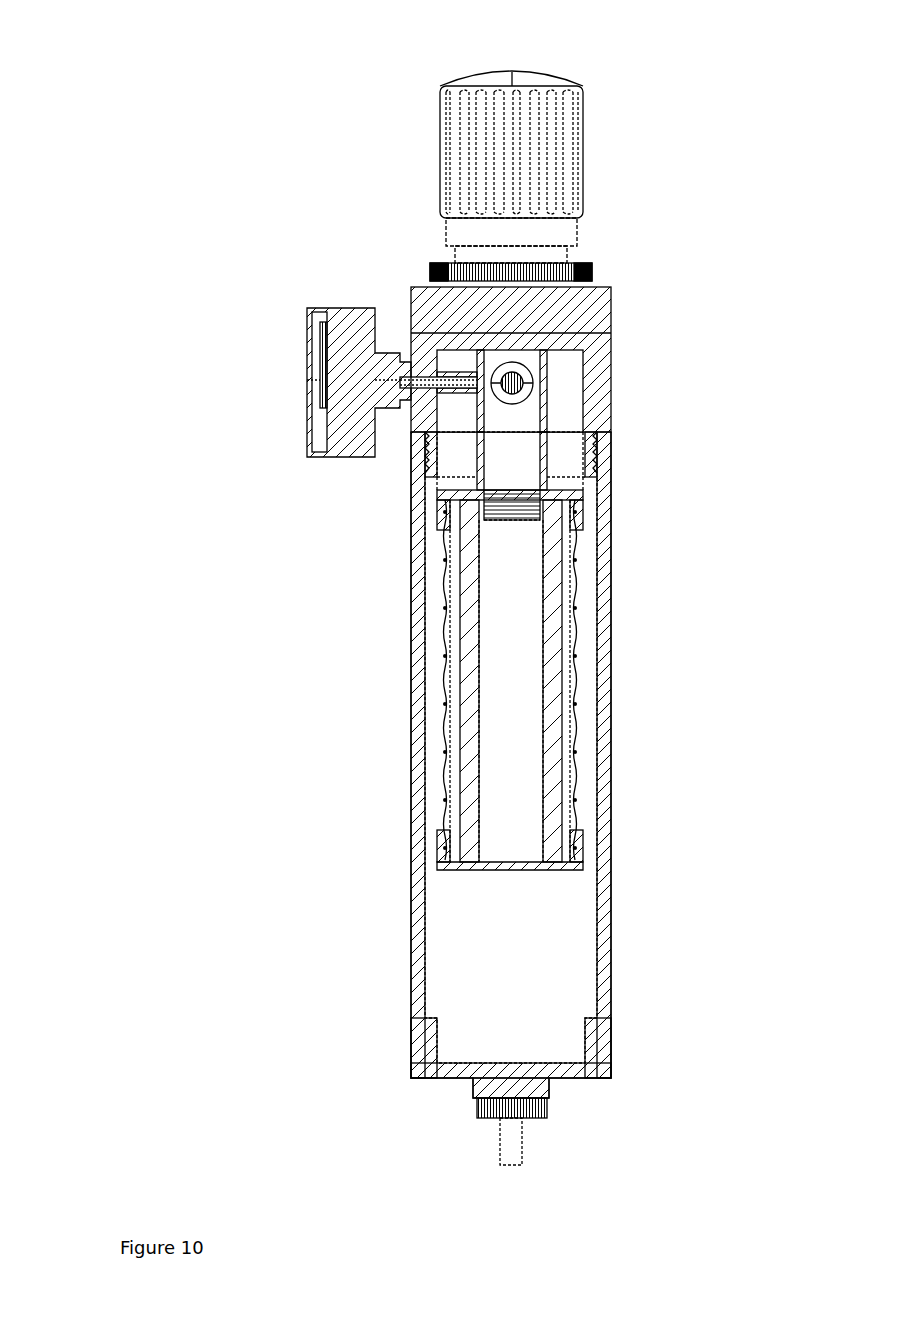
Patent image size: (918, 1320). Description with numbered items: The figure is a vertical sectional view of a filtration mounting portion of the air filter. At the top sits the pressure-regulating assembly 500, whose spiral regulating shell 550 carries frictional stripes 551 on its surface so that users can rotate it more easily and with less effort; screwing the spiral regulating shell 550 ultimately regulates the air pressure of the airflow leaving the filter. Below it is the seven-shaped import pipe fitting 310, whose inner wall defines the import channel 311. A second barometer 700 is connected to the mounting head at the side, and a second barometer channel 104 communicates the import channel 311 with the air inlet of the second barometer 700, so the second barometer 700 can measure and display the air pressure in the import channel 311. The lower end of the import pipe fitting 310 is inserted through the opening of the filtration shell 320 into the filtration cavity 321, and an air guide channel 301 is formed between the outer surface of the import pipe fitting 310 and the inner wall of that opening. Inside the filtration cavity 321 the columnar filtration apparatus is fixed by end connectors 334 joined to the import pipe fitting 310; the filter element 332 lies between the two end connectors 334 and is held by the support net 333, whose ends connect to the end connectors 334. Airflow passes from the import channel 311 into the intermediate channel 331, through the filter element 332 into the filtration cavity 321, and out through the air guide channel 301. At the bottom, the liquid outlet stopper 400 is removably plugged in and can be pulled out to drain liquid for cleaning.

The pressure-regulating assembly 500 is at (543, 144).
The spiral regulating shell 550 is at (490, 72).
The frictional stripes 551 is at (585, 160).
The second barometer channel 104 is at (455, 372).
The second barometer 700 is at (345, 330).
The import pipe fitting 310 is at (548, 375).
The import channel 311 is at (522, 437).
The air guide channel 301 is at (455, 473).
The end connector 334 is at (580, 500).
The support net 333 is at (442, 645).
The filter element 332 is at (553, 708).
The intermediate channel 331 is at (492, 770).
The filtration cavity 321 is at (565, 915).
The filtration shell 320 is at (420, 980).
The liquid outlet stopper 400 is at (512, 1138).